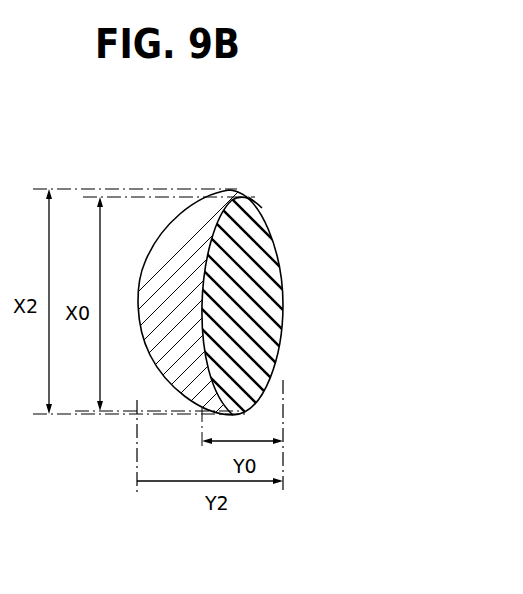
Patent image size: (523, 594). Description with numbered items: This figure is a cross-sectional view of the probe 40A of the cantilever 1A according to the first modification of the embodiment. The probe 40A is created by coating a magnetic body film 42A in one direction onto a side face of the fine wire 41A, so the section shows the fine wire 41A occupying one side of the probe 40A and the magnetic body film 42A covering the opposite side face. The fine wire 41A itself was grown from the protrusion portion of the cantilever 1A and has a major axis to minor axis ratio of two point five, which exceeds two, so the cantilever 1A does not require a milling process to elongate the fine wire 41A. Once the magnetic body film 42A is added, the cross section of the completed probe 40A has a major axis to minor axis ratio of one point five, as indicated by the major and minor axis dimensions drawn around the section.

The probe 40A is at (311, 320).
The cantilever 1A is at (210, 302).
The fine wire 41A is at (284, 262).
The magnetic body film 42A is at (160, 237).